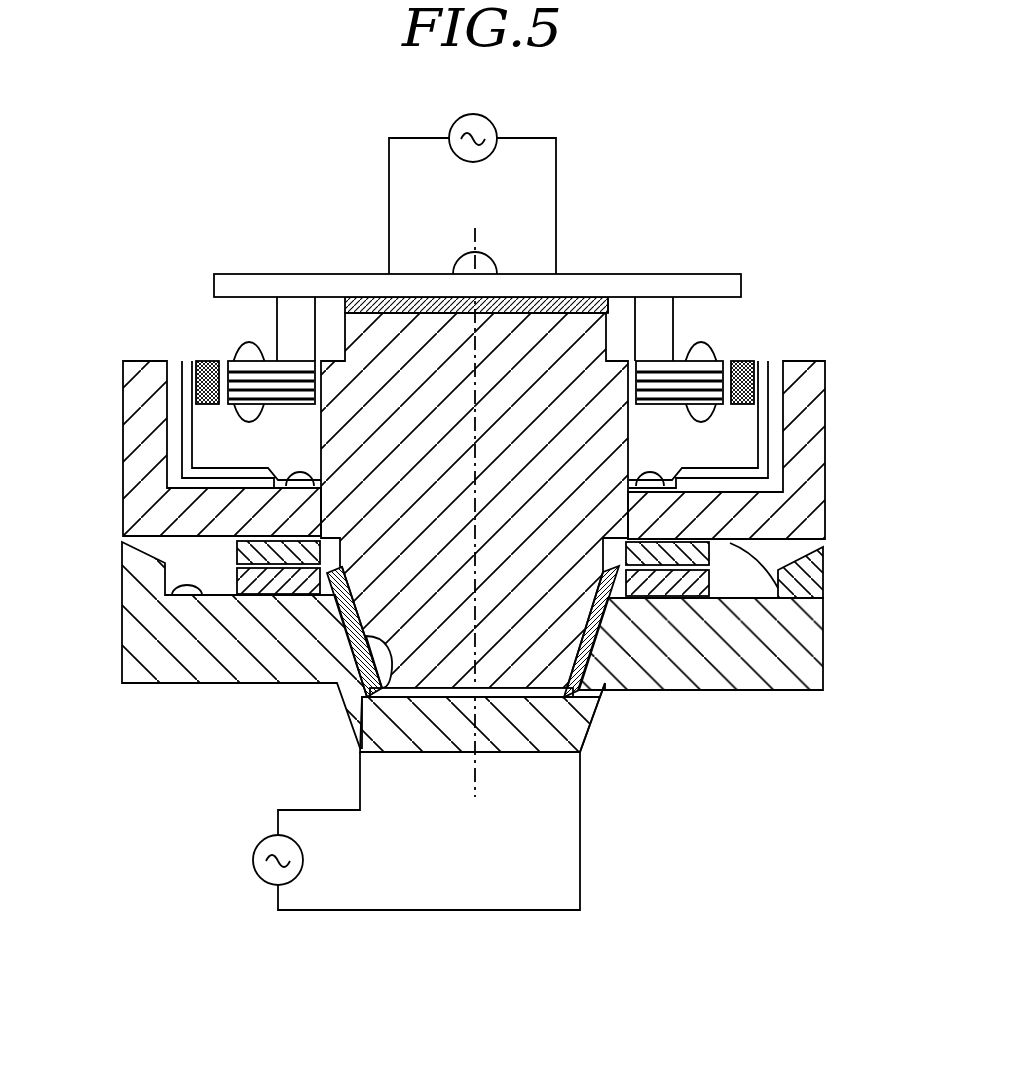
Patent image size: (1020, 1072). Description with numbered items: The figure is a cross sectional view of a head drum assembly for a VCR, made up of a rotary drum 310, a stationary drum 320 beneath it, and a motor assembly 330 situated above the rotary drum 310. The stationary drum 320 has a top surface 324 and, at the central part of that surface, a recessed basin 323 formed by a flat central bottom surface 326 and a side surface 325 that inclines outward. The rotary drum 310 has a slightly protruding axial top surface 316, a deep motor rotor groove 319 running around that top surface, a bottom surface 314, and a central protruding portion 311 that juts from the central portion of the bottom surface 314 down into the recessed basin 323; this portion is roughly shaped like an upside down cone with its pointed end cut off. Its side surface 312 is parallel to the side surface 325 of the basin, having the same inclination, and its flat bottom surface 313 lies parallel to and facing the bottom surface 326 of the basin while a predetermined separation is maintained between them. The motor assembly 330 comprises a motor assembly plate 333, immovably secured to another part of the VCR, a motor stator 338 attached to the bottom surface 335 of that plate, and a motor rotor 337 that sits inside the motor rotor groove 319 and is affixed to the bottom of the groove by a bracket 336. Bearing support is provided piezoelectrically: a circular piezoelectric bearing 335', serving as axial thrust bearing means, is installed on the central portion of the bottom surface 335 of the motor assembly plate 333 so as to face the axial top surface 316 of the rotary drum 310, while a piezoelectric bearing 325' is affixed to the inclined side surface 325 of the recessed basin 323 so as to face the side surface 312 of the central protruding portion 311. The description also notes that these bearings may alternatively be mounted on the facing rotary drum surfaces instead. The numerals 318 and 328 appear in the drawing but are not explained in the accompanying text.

The rotary drum 310 is at (124, 433).
The central protruding portion 311 is at (742, 690).
The side surface 312 is at (396, 700).
The flat bottom surface 313 is at (437, 700).
The bottom surface 314 is at (817, 620).
The axial top surface 316 is at (608, 317).
The insulating ring 318 is at (253, 556).
The motor rotor groove 319 is at (781, 366).
The stationary drum 320 is at (805, 582).
The recessed basin 323 is at (583, 748).
The top surface 324 is at (160, 598).
The side surface 325 is at (636, 667).
The piezoelectric bearing 325' is at (286, 657).
The flat central bottom surface 326 is at (507, 700).
The insulating ring 328 is at (258, 584).
The motor assembly 330 is at (699, 258).
The motor assembly plate 333 is at (231, 278).
The bottom surface 335 is at (488, 246).
The circular piezoelectric bearing 335' is at (634, 264).
The bracket 336 is at (188, 371).
The motor rotor 337 is at (202, 362).
The motor stator 338 is at (245, 372).